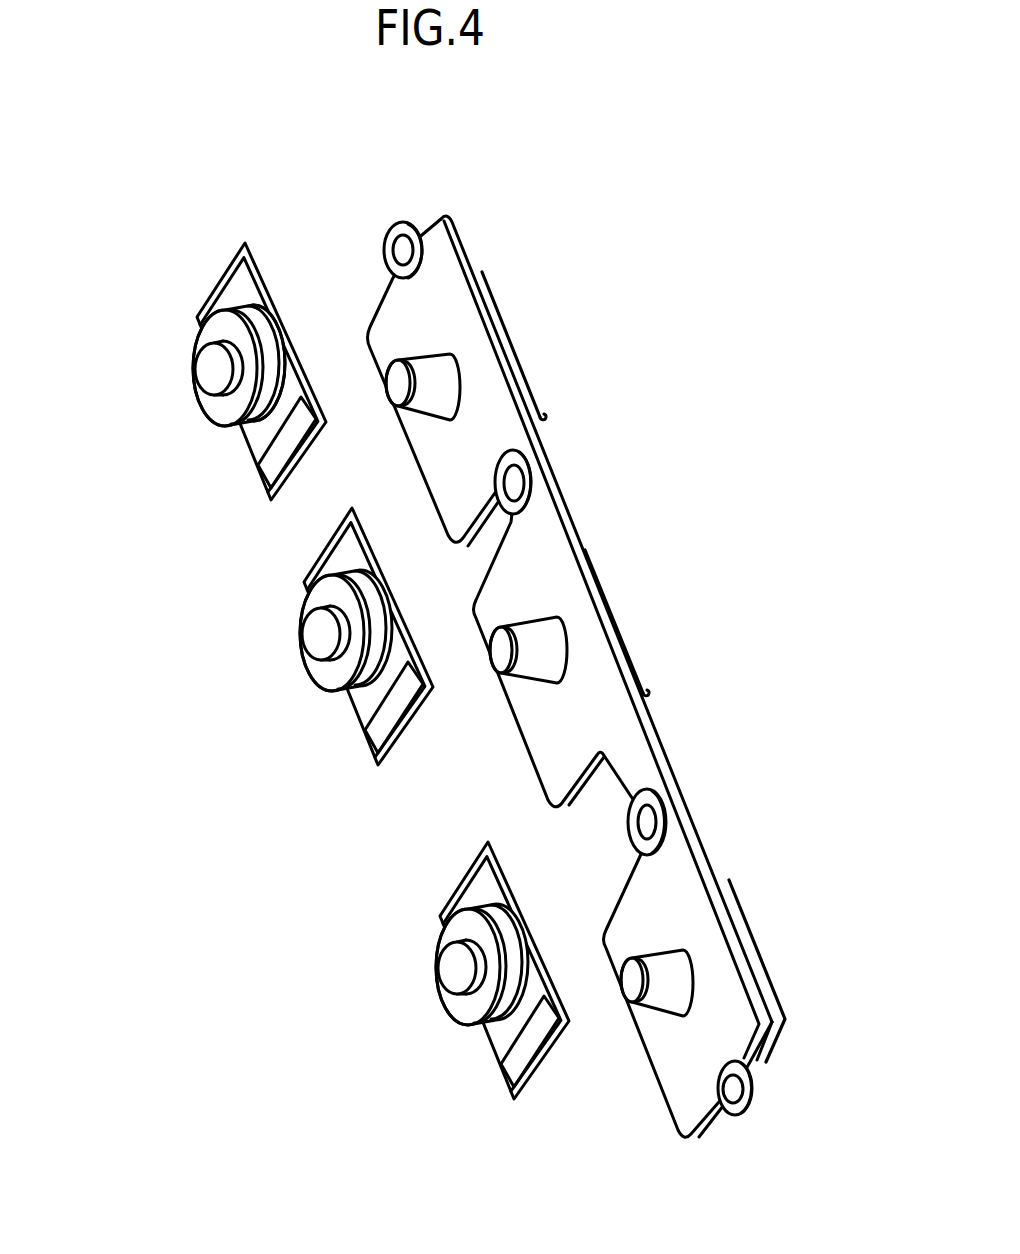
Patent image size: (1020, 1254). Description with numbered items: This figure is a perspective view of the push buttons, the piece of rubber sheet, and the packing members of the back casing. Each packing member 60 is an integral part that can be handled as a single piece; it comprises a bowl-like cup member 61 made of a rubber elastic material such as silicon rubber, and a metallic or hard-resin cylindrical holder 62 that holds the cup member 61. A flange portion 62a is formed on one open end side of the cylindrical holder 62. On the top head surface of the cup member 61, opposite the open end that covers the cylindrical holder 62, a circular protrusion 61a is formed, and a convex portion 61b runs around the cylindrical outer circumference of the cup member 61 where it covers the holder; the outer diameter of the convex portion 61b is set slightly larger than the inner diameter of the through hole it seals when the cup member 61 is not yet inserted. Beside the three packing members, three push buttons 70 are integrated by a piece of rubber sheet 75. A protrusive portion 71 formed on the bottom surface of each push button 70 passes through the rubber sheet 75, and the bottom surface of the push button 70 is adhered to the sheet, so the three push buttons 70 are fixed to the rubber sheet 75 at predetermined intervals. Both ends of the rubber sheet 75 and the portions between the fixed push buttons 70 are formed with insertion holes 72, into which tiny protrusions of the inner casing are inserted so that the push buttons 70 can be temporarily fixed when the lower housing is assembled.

The packing member 60 is at (316, 673).
The cup member 61 is at (301, 656).
The circular protrusion 61a is at (213, 368).
The convex portion 61b is at (278, 321).
The cylindrical holder 62 is at (257, 440).
The flange portion 62a is at (247, 443).
The push button 70 is at (616, 646).
The protrusive portion 71 is at (430, 373).
The insertion hole 72 is at (403, 236).
The rubber sheet 75 is at (552, 518).